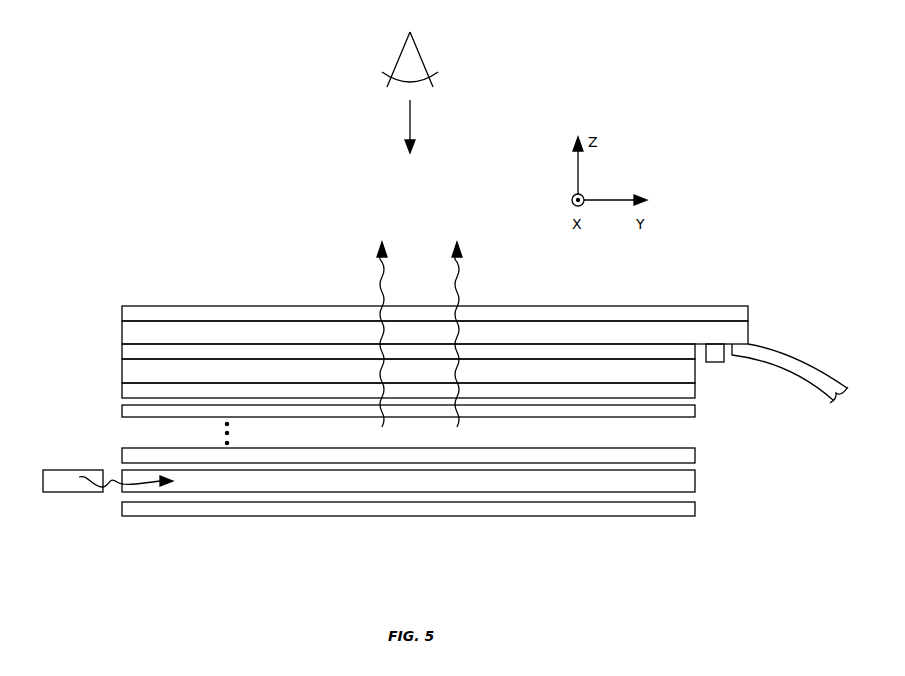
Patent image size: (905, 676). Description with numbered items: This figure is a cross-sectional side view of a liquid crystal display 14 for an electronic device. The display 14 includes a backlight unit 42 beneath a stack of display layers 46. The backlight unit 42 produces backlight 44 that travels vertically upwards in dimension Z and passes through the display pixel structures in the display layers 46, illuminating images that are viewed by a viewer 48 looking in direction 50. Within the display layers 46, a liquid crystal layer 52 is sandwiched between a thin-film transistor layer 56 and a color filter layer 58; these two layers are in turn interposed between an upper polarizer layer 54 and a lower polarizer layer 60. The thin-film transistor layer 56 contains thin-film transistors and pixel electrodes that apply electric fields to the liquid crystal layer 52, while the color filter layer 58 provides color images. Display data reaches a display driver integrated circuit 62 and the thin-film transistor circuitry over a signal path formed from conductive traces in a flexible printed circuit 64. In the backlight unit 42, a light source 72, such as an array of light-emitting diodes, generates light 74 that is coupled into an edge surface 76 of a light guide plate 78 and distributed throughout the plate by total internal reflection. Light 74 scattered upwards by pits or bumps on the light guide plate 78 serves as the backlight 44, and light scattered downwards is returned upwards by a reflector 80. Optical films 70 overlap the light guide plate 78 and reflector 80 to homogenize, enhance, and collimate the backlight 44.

The display 14 is at (688, 108).
The backlight unit 42 is at (705, 403).
The backlight 44 is at (454, 286).
The display layers 46 is at (108, 307).
The viewer 48 is at (420, 54).
The direction 50 is at (411, 120).
The liquid crystal layer 52 is at (208, 352).
The upper polarizer layer 54 is at (143, 306).
The thin-film transistor layer 56 is at (170, 330).
The color filter layer 58 is at (244, 370).
The lower polarizer layer 60 is at (275, 392).
The display driver integrated circuit 62 is at (714, 362).
The flexible printed circuit 64 is at (803, 363).
The optical films 70 is at (123, 453).
The light source 72 is at (53, 481).
The light 74 is at (92, 490).
The edge surface 76 is at (116, 486).
The light guide plate 78 is at (208, 483).
The reflector 80 is at (287, 508).